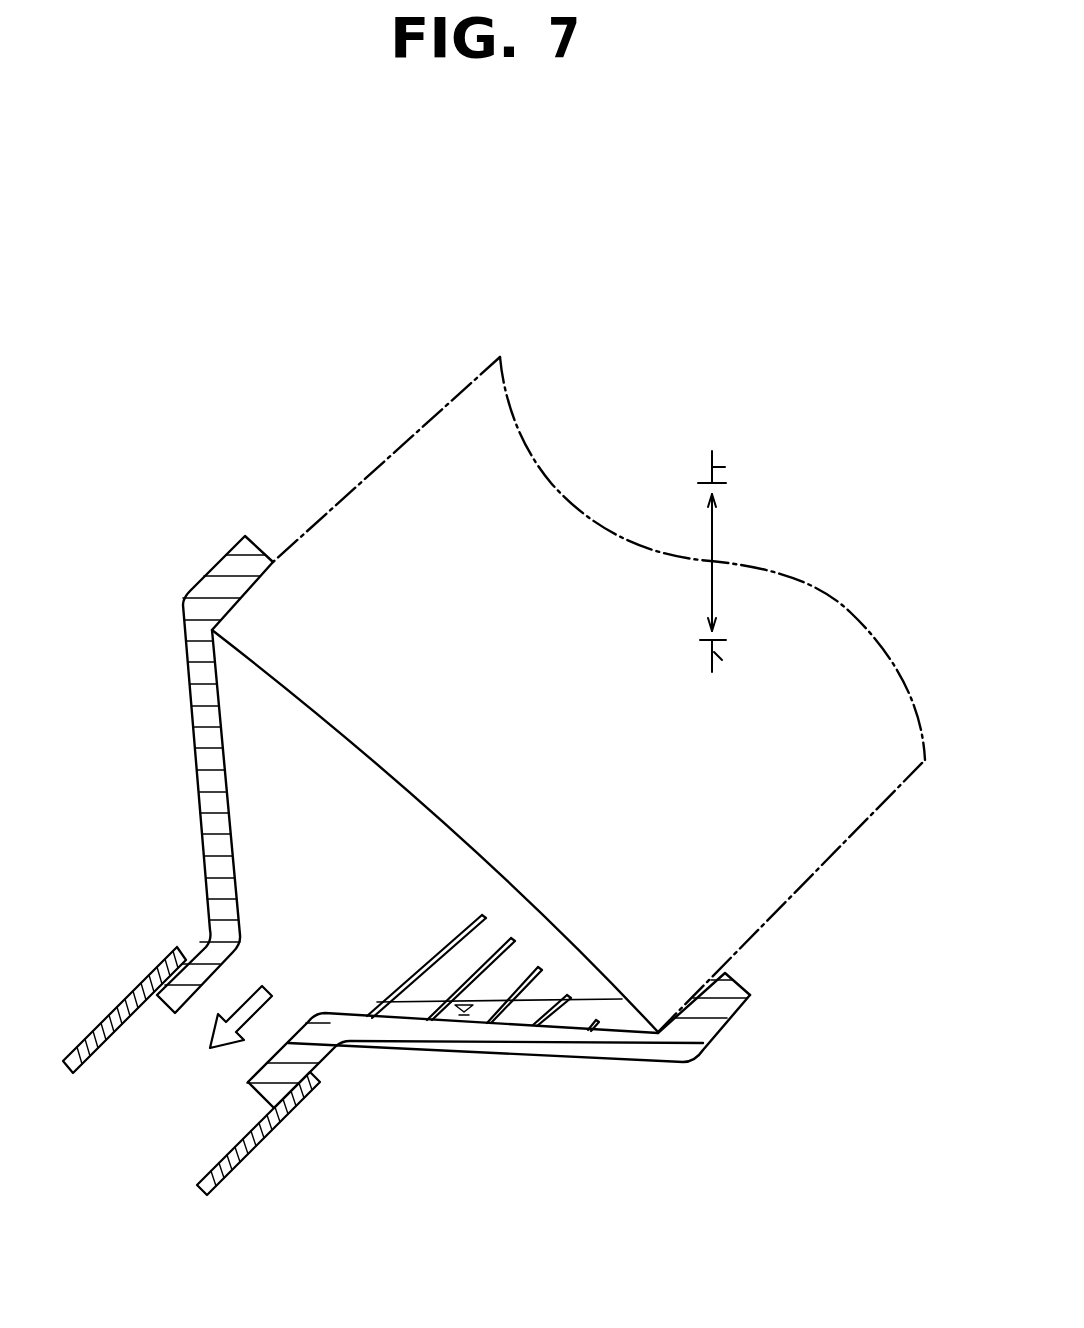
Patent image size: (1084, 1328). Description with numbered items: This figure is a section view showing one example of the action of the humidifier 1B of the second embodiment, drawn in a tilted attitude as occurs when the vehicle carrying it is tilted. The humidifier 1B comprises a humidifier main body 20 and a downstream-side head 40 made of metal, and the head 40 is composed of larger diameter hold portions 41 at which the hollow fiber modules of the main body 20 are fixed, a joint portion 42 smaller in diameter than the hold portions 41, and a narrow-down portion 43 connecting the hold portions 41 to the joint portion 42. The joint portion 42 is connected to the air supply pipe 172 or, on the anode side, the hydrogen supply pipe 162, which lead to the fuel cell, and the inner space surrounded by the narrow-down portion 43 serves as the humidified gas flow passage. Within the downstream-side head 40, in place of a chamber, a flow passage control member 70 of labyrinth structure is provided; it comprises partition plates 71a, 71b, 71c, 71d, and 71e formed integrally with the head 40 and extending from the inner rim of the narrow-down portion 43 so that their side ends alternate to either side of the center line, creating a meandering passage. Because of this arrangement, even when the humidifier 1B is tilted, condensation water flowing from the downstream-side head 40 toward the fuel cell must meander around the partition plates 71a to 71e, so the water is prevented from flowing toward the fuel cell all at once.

The humidifier 1B is at (676, 392).
The humidifier main body 20 is at (815, 880).
The downstream-side head 40 is at (165, 568).
The hold portion 41 is at (708, 1025).
The joint portion 42 is at (306, 1048).
The narrow-down portion 43 is at (455, 1033).
The flow passage control member 70 is at (520, 859).
The partition plate 71a is at (596, 1020).
The partition plate 71b is at (567, 995).
The partition plate 71c is at (538, 967).
The partition plate 71d is at (511, 938).
The partition plate 71e is at (482, 915).
The hydrogen supply pipe 162 is at (328, 1159).
The air supply pipe 172 is at (264, 1150).